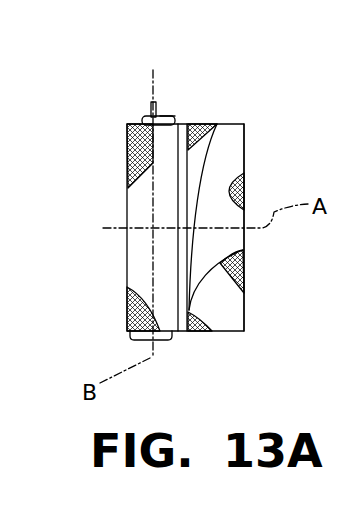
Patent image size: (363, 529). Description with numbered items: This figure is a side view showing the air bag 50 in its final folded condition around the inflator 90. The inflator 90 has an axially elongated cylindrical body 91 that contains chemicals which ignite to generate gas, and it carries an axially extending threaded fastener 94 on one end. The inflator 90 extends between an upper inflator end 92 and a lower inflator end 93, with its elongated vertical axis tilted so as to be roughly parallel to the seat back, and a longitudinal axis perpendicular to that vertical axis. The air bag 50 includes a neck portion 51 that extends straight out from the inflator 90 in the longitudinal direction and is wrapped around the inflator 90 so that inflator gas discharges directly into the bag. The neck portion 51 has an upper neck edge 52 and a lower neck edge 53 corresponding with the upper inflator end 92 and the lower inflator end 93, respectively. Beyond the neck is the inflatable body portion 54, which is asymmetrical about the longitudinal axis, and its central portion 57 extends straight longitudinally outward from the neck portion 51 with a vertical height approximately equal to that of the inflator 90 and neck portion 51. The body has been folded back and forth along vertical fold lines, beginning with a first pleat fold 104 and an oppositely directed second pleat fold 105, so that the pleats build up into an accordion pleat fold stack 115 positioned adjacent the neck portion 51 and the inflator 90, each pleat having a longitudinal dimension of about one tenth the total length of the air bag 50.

The air bag 50 is at (257, 96).
The inflator 90 is at (132, 116).
The upper inflator end 92 is at (141, 116).
The threaded fastener 94 is at (156, 102).
The cylindrical body 91 is at (174, 115).
The upper neck edge 52 is at (178, 120).
The neck portion 51 is at (176, 190).
The central portion 57 is at (185, 248).
The second pleat fold 105 is at (220, 122).
The inflatable body portion 54 is at (245, 140).
The first pleat fold 104 is at (227, 167).
The accordion pleat fold stack 115 is at (248, 305).
The lower inflator end 93 is at (138, 338).
The lower neck edge 53 is at (174, 332).